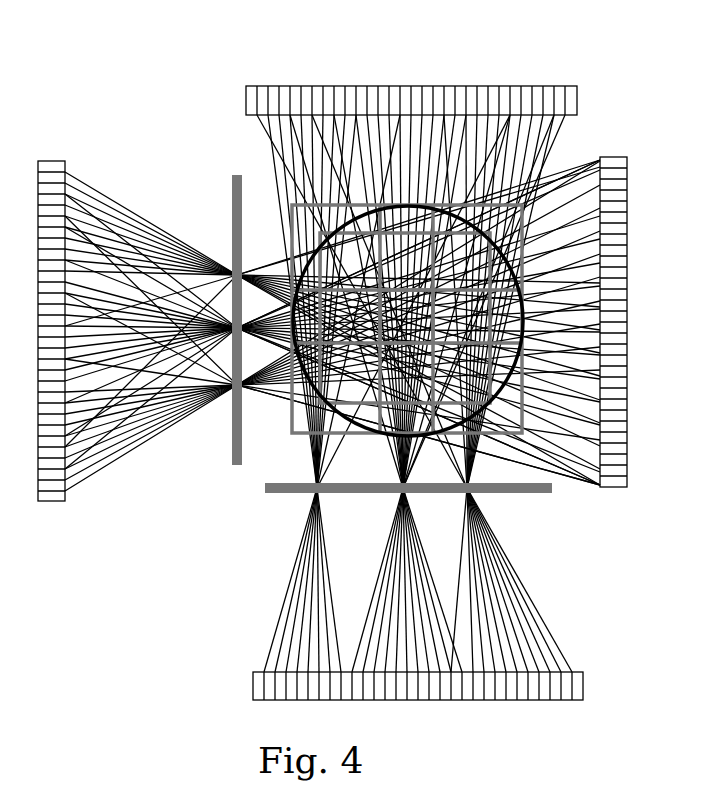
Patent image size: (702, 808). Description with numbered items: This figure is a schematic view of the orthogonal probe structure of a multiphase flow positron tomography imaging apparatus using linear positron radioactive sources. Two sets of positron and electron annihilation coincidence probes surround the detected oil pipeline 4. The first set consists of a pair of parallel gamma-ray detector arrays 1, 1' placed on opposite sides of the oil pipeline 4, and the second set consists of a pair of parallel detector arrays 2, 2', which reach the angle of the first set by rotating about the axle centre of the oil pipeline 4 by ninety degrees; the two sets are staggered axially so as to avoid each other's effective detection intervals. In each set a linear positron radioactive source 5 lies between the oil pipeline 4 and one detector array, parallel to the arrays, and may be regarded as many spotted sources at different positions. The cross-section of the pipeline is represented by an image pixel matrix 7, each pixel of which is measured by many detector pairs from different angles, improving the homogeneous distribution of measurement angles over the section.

The gamma-ray detector array 1 is at (37, 303).
The gamma-ray detector array 1' is at (638, 296).
The detector array 2 is at (411, 65).
The detector array 2' is at (418, 713).
The detected oil pipeline 4 is at (309, 244).
The linear positron radioactive source 5 is at (221, 214).
The image pixel matrix 7 is at (296, 439).